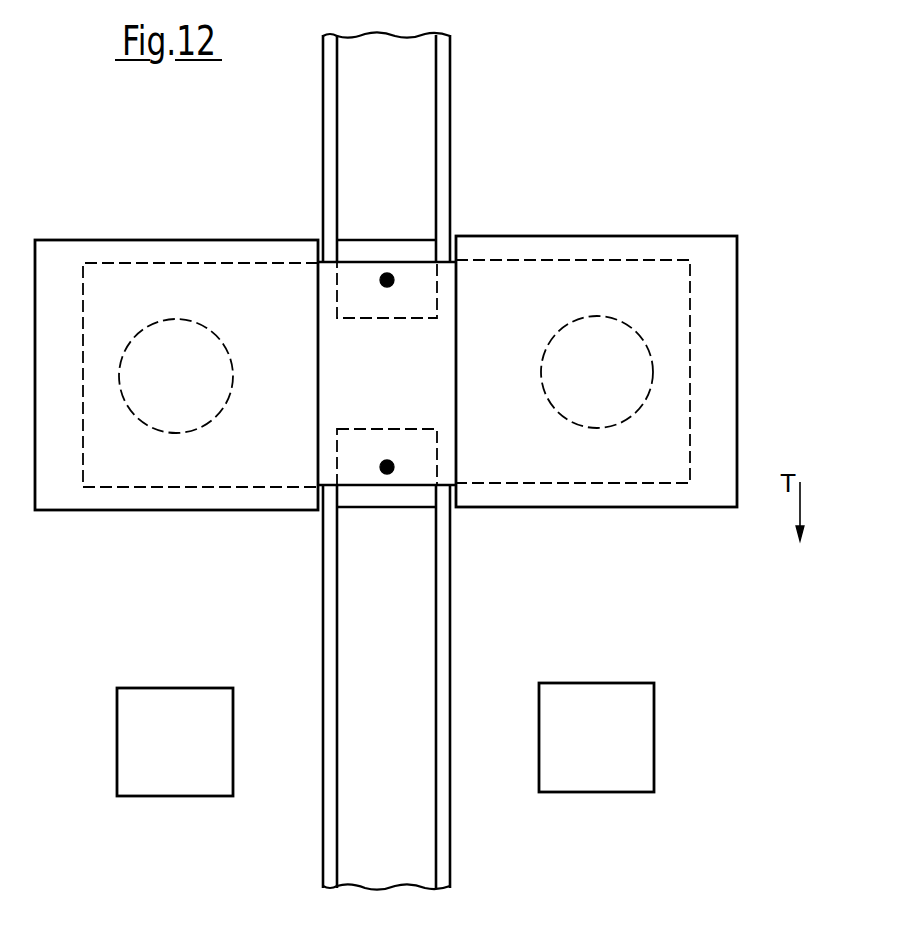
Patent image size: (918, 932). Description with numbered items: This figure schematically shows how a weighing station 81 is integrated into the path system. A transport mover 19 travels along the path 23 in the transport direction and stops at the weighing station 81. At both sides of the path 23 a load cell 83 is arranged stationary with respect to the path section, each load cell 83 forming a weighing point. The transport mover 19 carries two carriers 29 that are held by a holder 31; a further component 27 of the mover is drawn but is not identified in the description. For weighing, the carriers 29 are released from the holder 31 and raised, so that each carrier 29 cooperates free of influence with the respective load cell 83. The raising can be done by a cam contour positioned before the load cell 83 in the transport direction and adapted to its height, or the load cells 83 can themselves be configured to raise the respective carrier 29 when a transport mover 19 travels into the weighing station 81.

The transport mover 19 is at (613, 152).
The path 23 is at (322, 867).
The lower connecting region 27 is at (412, 497).
The carrier 29 is at (67, 260).
The holder 31 is at (413, 260).
The weighing station 81 is at (720, 653).
The load cell 83 is at (163, 752).